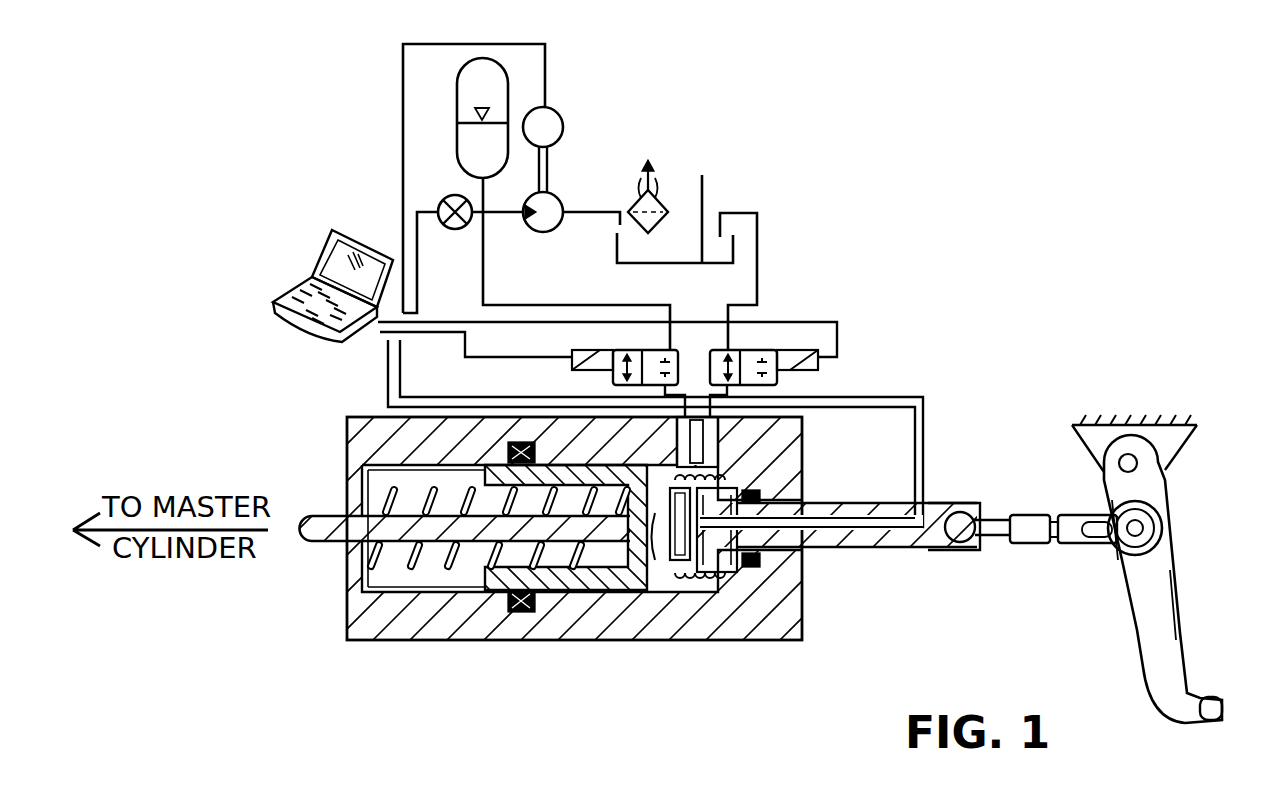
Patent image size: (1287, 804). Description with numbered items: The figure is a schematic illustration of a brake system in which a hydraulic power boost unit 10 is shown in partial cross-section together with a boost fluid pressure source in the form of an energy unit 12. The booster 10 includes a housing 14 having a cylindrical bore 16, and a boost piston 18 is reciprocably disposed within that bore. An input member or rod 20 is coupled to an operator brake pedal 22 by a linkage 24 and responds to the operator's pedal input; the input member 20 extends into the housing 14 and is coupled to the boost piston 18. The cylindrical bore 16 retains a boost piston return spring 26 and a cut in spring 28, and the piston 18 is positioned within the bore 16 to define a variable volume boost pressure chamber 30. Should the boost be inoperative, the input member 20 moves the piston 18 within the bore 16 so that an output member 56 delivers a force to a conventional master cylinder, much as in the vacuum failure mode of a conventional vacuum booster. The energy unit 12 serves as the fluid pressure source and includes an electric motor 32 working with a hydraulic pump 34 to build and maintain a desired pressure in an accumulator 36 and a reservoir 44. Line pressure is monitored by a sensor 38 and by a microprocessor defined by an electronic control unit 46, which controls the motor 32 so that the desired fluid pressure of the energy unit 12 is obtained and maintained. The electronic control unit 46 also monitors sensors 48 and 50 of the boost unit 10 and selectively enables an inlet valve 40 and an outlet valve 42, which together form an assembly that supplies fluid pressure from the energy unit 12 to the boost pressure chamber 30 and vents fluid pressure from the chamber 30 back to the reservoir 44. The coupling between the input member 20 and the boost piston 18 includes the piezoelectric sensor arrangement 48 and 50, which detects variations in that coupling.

The hydraulic power boost unit 10 is at (575, 665).
The energy unit 12 is at (635, 104).
The housing 14 is at (472, 623).
The cylindrical bore 16 is at (362, 480).
The boost piston 18 is at (640, 582).
The input member 20 is at (900, 537).
The operator brake pedal 22 is at (1215, 703).
The linkage 24 is at (1033, 527).
The boost piston return spring 26 is at (410, 565).
The cut in spring 28 is at (715, 575).
The boost pressure chamber 30 is at (722, 585).
The electric motor 32 is at (565, 130).
The hydraulic pump 34 is at (548, 232).
The accumulator 36 is at (457, 143).
The sensor 38 is at (452, 232).
The inlet valve 40 is at (605, 373).
The outlet valve 42 is at (778, 378).
The reservoir 44 is at (712, 215).
The electronic control unit 46 is at (292, 292).
The piezoelectric sensor 48 is at (672, 562).
The piezoelectric sensor 50 is at (802, 638).
The output member 56 is at (305, 543).